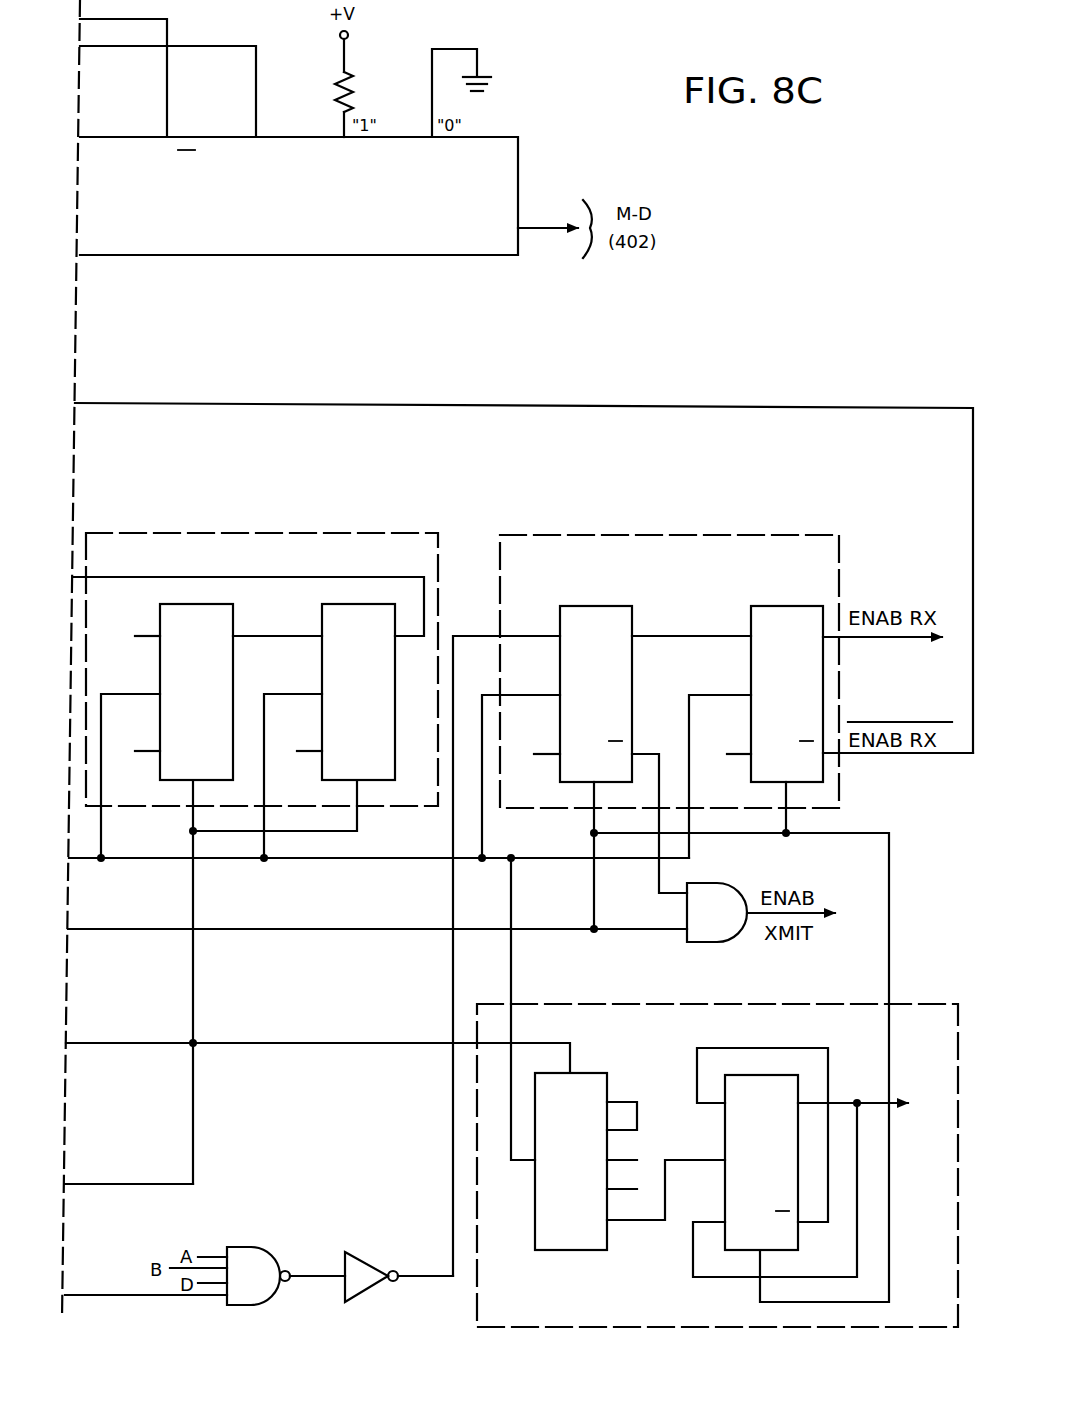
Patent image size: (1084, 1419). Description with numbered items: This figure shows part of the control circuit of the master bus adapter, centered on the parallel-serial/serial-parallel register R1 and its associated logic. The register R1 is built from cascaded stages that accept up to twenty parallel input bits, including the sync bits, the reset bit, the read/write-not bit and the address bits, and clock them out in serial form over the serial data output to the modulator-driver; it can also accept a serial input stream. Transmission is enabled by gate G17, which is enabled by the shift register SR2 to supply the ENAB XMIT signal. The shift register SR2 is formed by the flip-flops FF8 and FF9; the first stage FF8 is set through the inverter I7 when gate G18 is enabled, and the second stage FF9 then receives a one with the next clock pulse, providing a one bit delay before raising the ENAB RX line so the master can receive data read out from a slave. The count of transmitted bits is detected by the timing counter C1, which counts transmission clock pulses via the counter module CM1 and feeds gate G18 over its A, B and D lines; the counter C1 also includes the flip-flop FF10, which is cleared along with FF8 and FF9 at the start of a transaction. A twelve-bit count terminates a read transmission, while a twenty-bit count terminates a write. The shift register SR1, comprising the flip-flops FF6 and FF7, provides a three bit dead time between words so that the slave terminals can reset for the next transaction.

The parallel-serial/serial-parallel register R1 is at (512, 165).
The shift register SR1 is at (288, 674).
The shift register SR2 is at (691, 675).
The timing counter C1 is at (717, 1142).
The counter module CM1 is at (598, 1076).
The inverter I7 is at (353, 1263).
The gate G17 is at (717, 912).
The gate G18 is at (258, 1276).
The flip-flop FF6 is at (196, 692).
The flip-flop FF7 is at (358, 692).
The flip-flop FF8 is at (596, 694).
The flip-flop FF9 is at (787, 694).
The flip-flop FF10 is at (761, 1162).